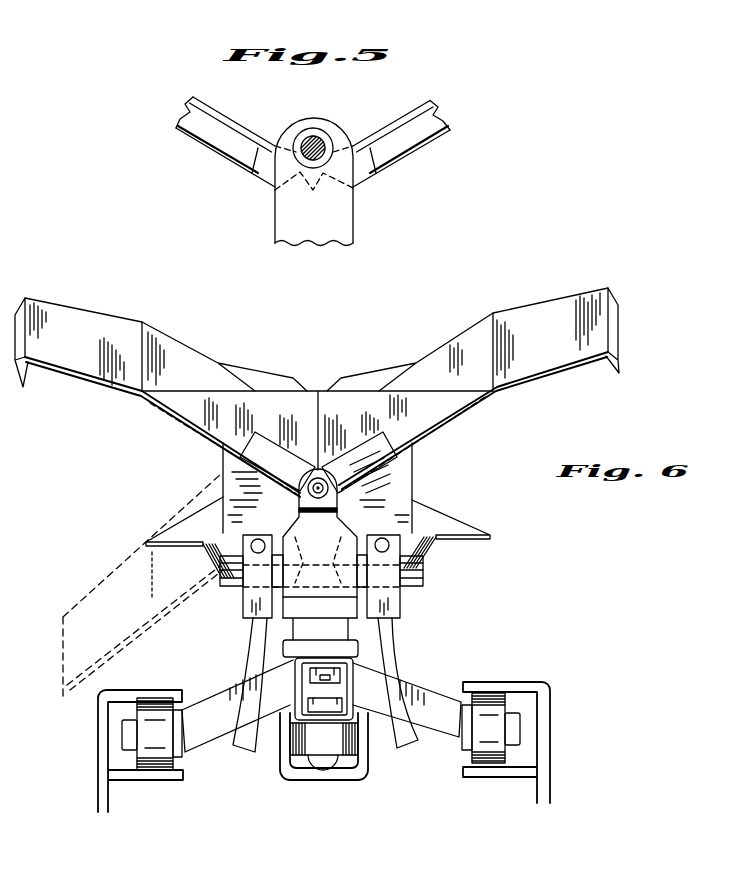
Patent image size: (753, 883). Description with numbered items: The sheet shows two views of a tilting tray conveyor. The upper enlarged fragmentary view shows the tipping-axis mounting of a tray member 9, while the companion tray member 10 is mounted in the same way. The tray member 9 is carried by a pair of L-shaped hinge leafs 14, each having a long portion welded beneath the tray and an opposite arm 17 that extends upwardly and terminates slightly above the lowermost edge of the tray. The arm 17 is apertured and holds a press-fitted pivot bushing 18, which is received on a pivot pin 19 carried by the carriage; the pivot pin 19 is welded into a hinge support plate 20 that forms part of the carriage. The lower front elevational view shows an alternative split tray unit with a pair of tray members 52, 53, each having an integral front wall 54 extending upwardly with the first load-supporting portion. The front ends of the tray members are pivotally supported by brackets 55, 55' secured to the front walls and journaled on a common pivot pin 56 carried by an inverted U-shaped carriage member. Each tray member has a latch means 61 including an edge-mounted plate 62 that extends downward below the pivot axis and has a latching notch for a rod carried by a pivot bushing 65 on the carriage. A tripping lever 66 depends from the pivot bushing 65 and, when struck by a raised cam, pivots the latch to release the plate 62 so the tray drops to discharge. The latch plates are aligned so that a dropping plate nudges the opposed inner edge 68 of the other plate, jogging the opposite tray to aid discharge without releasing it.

In FIG. 5, the tray member 9 is at (393, 107).
In FIG. 5, the tray member 10 is at (236, 118).
In FIG. 5, the hinge leaf 14 is at (225, 152).
In FIG. 5, the arm 17 is at (268, 193).
In FIG. 5, the pivot bushing 18 is at (322, 170).
In FIG. 5, the pivot pin 19 is at (313, 147).
In FIG. 5, the hinge support plate 20 is at (338, 229).
In FIG. 6, the tray member 52 is at (527, 385).
In FIG. 6, the tray member 53 is at (105, 388).
In FIG. 6, the front wall 54 is at (337, 397).
In FIG. 6, the bracket 55 is at (232, 461).
In FIG. 6, the bracket 55' is at (394, 462).
In FIG. 6, the pivot pin 56 is at (300, 495).
In FIG. 6, the latch means 61 is at (415, 592).
In FIG. 6, the plate 62 is at (345, 494).
In FIG. 6, the pivot bushing 65 is at (401, 610).
In FIG. 6, the tripping lever 66 is at (414, 750).
In FIG. 6, the inner edge 68 is at (340, 528).